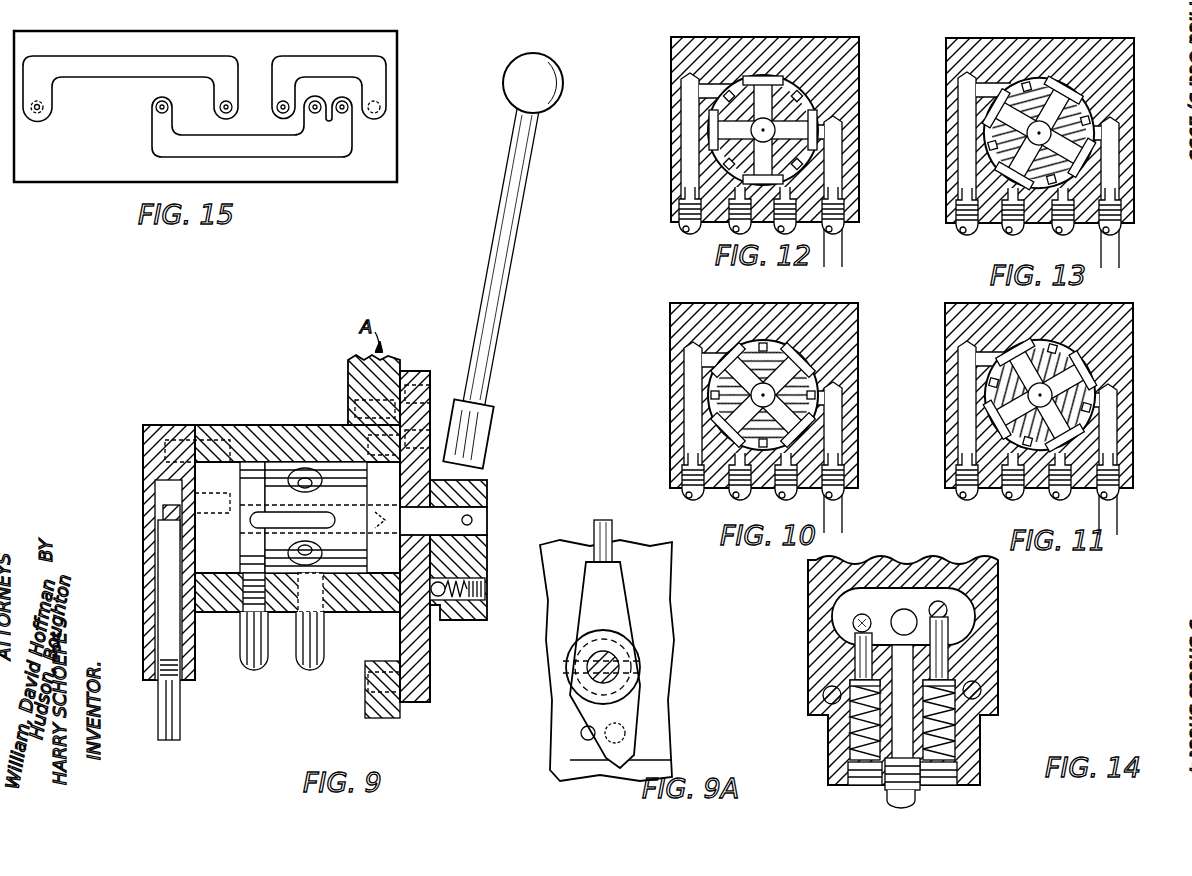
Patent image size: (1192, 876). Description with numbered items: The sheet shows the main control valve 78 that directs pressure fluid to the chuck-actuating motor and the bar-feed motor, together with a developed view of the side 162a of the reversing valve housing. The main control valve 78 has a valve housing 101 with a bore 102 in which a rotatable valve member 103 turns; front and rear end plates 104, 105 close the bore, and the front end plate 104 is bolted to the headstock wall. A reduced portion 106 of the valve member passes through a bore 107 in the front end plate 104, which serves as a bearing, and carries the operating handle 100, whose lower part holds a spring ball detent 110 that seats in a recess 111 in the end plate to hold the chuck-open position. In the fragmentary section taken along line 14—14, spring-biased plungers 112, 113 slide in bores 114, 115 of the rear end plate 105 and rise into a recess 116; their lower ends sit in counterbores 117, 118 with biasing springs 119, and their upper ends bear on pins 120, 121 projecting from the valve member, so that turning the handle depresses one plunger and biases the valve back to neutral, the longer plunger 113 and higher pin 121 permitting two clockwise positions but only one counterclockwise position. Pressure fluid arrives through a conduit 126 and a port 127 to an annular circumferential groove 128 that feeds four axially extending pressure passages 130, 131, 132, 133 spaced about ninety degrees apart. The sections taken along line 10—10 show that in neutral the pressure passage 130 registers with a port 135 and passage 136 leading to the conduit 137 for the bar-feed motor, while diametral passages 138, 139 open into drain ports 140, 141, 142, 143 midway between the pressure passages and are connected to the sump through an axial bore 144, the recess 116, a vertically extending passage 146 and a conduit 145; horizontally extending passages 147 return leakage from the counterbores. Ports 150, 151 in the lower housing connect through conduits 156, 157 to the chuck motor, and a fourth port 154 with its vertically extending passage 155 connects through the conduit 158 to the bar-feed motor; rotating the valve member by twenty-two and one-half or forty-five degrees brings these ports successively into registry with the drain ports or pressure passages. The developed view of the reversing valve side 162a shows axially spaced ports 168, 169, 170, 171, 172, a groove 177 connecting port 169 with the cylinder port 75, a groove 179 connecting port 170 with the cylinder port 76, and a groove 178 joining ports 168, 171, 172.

In FIG. 9, the section line 10 is at (310, 380).
In FIG. 9, the section line 14 is at (195, 370).
In FIG. 15, the port 75 is at (43, 104).
In FIG. 15, the port 76 is at (381, 108).
In FIG. 9, the main control valve 78 is at (143, 432).
In FIG. 9, the operating handle 100 is at (508, 252).
In FIG. 9, the valve housing 101 is at (290, 432).
In FIG. 10, the valve housing 101 is at (825, 299).
In FIG. 9, the bore 102 is at (354, 432).
In FIG. 9, the rotatable valve member 103 is at (350, 575).
In FIG. 9, the front end plate 104 is at (404, 366).
In FIG. 9A, the front end plate 104 is at (655, 593).
In FIG. 9, the rear end plate 105 is at (174, 432).
In FIG. 9, the reduced portion 106 is at (462, 505).
In FIG. 9A, the reduced portion 106 is at (590, 673).
In FIG. 9, the bore 107 is at (414, 507).
In FIG. 9, the spring ball detent 110 is at (452, 578).
In FIG. 9A, the spring ball detent 110 is at (625, 731).
In FIG. 9A, the recess 111 is at (581, 734).
In FIG. 14, the spring-biased plunger 112 is at (862, 663).
In FIG. 14, the spring-biased plunger 113 is at (945, 655).
In FIG. 14, the bore 114 is at (858, 652).
In FIG. 14, the bore 115 is at (960, 645).
In FIG. 14, the recess 116 is at (965, 605).
In FIG. 14, the counterbore 117 is at (852, 735).
In FIG. 14, the counterbore 118 is at (955, 735).
In FIG. 14, the biasing spring 119 is at (960, 695).
In FIG. 14, the pin 120 is at (868, 606).
In FIG. 14, the pin 121 is at (942, 605).
In FIG. 9, the conduit 126 is at (240, 650).
In FIG. 9, the port 127 is at (243, 612).
In FIG. 9, the annular circumferential groove 128 is at (254, 462).
In FIG. 9, the pressure passage 130 is at (320, 517).
In FIG. 12, the pressure passage 130 is at (797, 129).
In FIG. 13, the pressure passage 130 is at (1057, 133).
In FIG. 10, the pressure passage 130 is at (784, 395).
In FIG. 11, the pressure passage 130 is at (1040, 395).
In FIG. 12, the pressure passage 131 is at (742, 129).
In FIG. 13, the pressure passage 131 is at (1060, 130).
In FIG. 10, the pressure passage 131 is at (764, 424).
In FIG. 11, the pressure passage 131 is at (1023, 395).
In FIG. 9, the pressure passage 132 is at (338, 513).
In FIG. 12, the pressure passage 132 is at (678, 148).
In FIG. 13, the pressure passage 132 is at (958, 160).
In FIG. 10, the pressure passage 132 is at (677, 403).
In FIG. 12, the pressure passage 133 is at (863, 74).
In FIG. 13, the pressure passage 133 is at (1023, 40).
In FIG. 10, the pressure passage 133 is at (751, 309).
In FIG. 13, the port 135 is at (1132, 185).
In FIG. 10, the port 135 is at (861, 454).
In FIG. 10, the passage 136 is at (864, 439).
In FIG. 12, the conduit 137 is at (858, 216).
In FIG. 13, the conduit 137 is at (1137, 215).
In FIG. 10, the conduit 137 is at (866, 480).
In FIG. 11, the conduit 137 is at (1138, 480).
In FIG. 10, the diametral passage 138 is at (862, 346).
In FIG. 10, the diametral passage 139 is at (680, 362).
In FIG. 12, the drain port 140 is at (765, 44).
In FIG. 13, the drain port 140 is at (959, 112).
In FIG. 10, the drain port 140 is at (675, 342).
In FIG. 12, the drain port 141 is at (859, 178).
In FIG. 13, the drain port 141 is at (1095, 40).
In FIG. 10, the drain port 141 is at (872, 320).
In FIG. 12, the drain port 142 is at (858, 171).
In FIG. 13, the drain port 142 is at (1125, 144).
In FIG. 10, the drain port 142 is at (859, 420).
In FIG. 12, the drain port 143 is at (668, 133).
In FIG. 13, the drain port 143 is at (971, 204).
In FIG. 10, the drain port 143 is at (678, 427).
In FIG. 13, the axial bore 144 is at (961, 132).
In FIG. 10, the axial bore 144 is at (675, 381).
In FIG. 14, the axial bore 144 is at (886, 618).
In FIG. 9, the conduit 145 is at (182, 700).
In FIG. 9, the vertically extending passage 146 is at (180, 545).
In FIG. 14, the vertically extending passage 146 is at (822, 697).
In FIG. 14, the horizontally extending passage 147 is at (850, 760).
In FIG. 12, the port 150 is at (677, 193).
In FIG. 13, the port 150 is at (980, 237).
In FIG. 10, the port 150 is at (680, 467).
In FIG. 11, the port 150 is at (962, 416).
In FIG. 12, the port 151 is at (850, 186).
In FIG. 13, the port 151 is at (1118, 185).
In FIG. 10, the port 151 is at (852, 462).
In FIG. 11, the port 151 is at (1124, 459).
In FIG. 13, the fourth port 154 is at (962, 147).
In FIG. 10, the fourth port 154 is at (691, 384).
In FIG. 13, the vertically extending passage 155 is at (961, 186).
In FIG. 10, the vertically extending passage 155 is at (680, 447).
In FIG. 12, the conduit 156 is at (820, 225).
In FIG. 13, the conduit 156 is at (1084, 225).
In FIG. 10, the conduit 156 is at (793, 489).
In FIG. 11, the conduit 156 is at (1089, 489).
In FIG. 12, the conduit 157 is at (708, 221).
In FIG. 13, the conduit 157 is at (1031, 225).
In FIG. 10, the conduit 157 is at (724, 489).
In FIG. 11, the conduit 157 is at (994, 490).
In FIG. 12, the conduit 158 is at (662, 214).
In FIG. 13, the conduit 158 is at (945, 215).
In FIG. 10, the conduit 158 is at (667, 480).
In FIG. 11, the conduit 158 is at (967, 476).
In FIG. 15, the side of valve housing 162a is at (388, 166).
In FIG. 15, the port 168 is at (156, 105).
In FIG. 15, the port 169 is at (220, 110).
In FIG. 15, the port 170 is at (278, 112).
In FIG. 15, the port 171 is at (322, 90).
In FIG. 15, the port 172 is at (345, 115).
In FIG. 15, the groove 177 is at (35, 118).
In FIG. 15, the groove 178 is at (280, 150).
In FIG. 15, the groove 179 is at (378, 81).